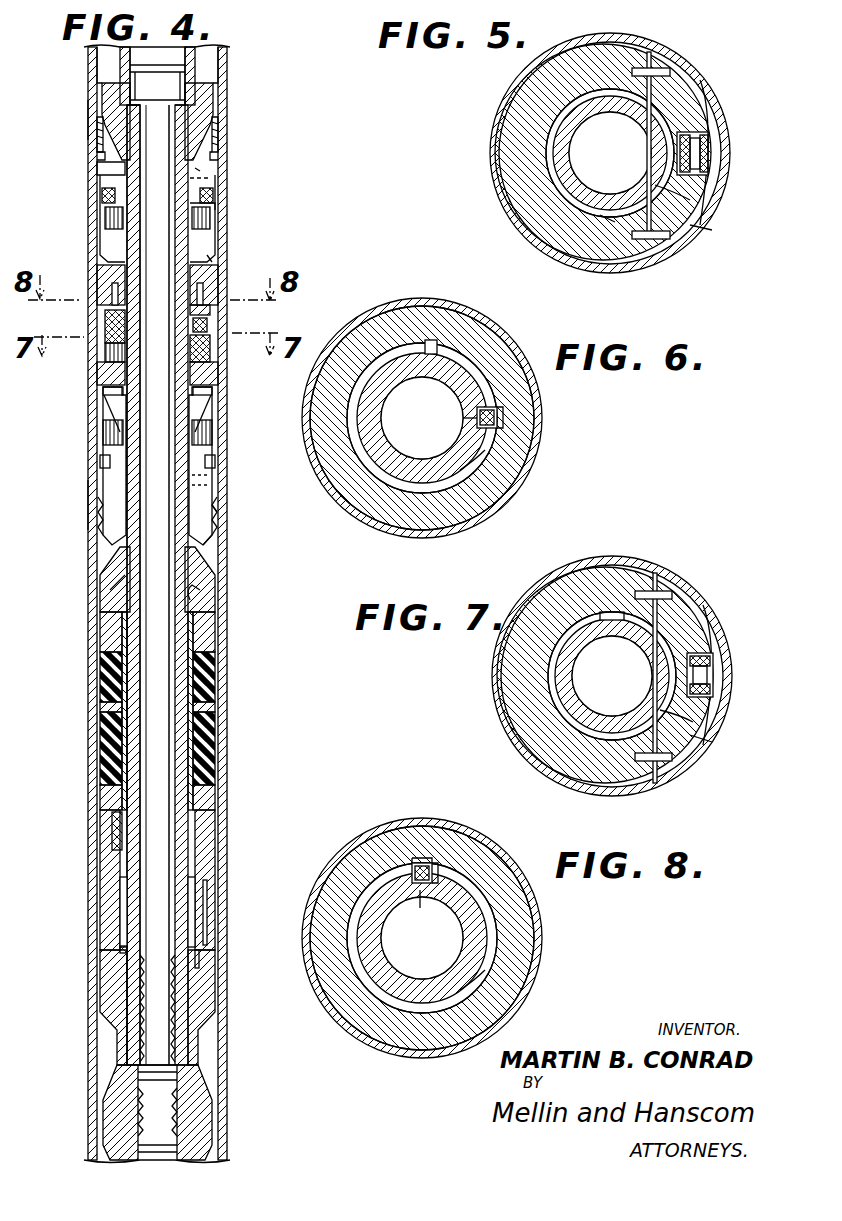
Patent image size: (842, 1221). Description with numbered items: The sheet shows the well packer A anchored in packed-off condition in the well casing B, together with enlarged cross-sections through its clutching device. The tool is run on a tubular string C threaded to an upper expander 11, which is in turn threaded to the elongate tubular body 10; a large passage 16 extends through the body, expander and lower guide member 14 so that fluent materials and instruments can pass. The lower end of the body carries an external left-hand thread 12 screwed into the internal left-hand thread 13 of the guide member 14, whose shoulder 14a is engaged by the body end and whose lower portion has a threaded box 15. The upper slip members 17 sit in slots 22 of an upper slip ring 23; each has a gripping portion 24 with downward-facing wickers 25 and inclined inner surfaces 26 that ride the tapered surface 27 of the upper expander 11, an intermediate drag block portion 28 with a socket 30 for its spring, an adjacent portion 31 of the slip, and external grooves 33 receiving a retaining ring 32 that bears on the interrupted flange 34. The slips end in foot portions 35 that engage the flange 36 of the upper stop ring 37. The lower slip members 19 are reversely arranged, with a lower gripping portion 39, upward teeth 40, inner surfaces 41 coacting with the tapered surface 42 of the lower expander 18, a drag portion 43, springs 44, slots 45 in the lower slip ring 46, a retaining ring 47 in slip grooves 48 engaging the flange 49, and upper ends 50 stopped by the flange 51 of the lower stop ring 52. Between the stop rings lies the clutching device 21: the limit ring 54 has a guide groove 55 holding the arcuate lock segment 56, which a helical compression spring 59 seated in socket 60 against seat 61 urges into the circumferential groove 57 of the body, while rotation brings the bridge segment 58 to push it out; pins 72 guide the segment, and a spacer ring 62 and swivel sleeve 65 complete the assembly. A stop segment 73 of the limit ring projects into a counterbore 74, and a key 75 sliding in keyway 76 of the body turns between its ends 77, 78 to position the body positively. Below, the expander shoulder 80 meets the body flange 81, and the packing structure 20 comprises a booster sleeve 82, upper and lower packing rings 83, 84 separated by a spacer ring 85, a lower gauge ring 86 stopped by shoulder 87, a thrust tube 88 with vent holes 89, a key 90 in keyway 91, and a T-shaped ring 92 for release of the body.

In FIG. 4, the well packer A is at (197, 170).
In FIG. 4, the well casing B is at (88, 118).
In FIG. 4, the tubular string C is at (210, 63).
In FIG. 4, the reference point D is at (105, 63).
In FIG. 4, the body 10 is at (132, 543).
In FIG. 5, the body 10 is at (570, 120).
In FIG. 6, the body 10 is at (362, 422).
In FIG. 7, the body 10 is at (560, 680).
In FIG. 8, the body 10 is at (473, 957).
In FIG. 4, the upper expander 11 is at (112, 90).
In FIG. 4, the external left-hand thread 12 is at (178, 1040).
In FIG. 4, the internal left-hand thread 13 is at (128, 980).
In FIG. 4, the guide member 14 is at (115, 1110).
In FIG. 4, the shoulder 14a is at (136, 1067).
In FIG. 4, the threaded box 15 is at (190, 1118).
In FIG. 4, the passage 16 is at (172, 927).
In FIG. 5, the passage 16 is at (580, 145).
In FIG. 6, the passage 16 is at (384, 405).
In FIG. 7, the passage 16 is at (580, 663).
In FIG. 8, the passage 16 is at (390, 913).
In FIG. 4, the upper slip members 17 is at (100, 168).
In FIG. 4, the lower expander 18 is at (110, 590).
In FIG. 4, the lower slip members 19 is at (97, 503).
In FIG. 4, the packing structure 20 is at (102, 675).
In FIG. 4, the clutching device 21 is at (208, 325).
In FIG. 5, the clutching device 21 is at (682, 98).
In FIG. 7, the clutching device 21 is at (697, 620).
In FIG. 4, the slots 22 is at (207, 262).
In FIG. 4, the upper slip ring 23 is at (100, 240).
In FIG. 4, the upper gripping portion 24 is at (100, 133).
In FIG. 4, the wickers 25 is at (97, 155).
In FIG. 4, the inner surfaces 26 is at (204, 108).
In FIG. 4, the externally tapered surface 27 is at (213, 150).
In FIG. 4, the drag block portion 28 is at (106, 218).
In FIG. 4, the socket 30 is at (212, 240).
In FIG. 4, the retainer ring 31 is at (214, 207).
In FIG. 4, the retaining ring 32 is at (212, 194).
In FIG. 4, the external grooves 33 is at (103, 195).
In FIG. 4, the interrupted flange 34 is at (212, 180).
In FIG. 4, the lower foot portions 35 is at (100, 265).
In FIG. 4, the upwardly projecting flange 36 is at (212, 270).
In FIG. 4, the upper stop ring 37 is at (204, 290).
In FIG. 6, the upper stop ring 37 is at (352, 342).
In FIG. 8, the upper stop ring 37 is at (363, 1018).
In FIG. 4, the lower gripping portion 39 is at (210, 218).
In FIG. 4, the teeth 40 is at (216, 510).
In FIG. 4, the inner surfaces 41 is at (208, 530).
In FIG. 4, the tapered surface 42 is at (200, 560).
In FIG. 4, the drag portion 43 is at (104, 428).
In FIG. 4, the springs 44 is at (211, 435).
In FIG. 4, the longitudinal slots 45 is at (110, 405).
In FIG. 4, the lower slip ring 46 is at (208, 408).
In FIG. 4, the retaining ring 47 is at (101, 460).
In FIG. 4, the slip grooves 48 is at (214, 460).
In FIG. 4, the lower slip ring flange 49 is at (212, 478).
In FIG. 4, the upper ends 50 is at (211, 391).
In FIG. 4, the downwardly extending flange 51 is at (104, 390).
In FIG. 4, the lower stop ring 52 is at (212, 373).
In FIG. 4, the limit ring 54 is at (110, 325).
In FIG. 5, the limit ring 54 is at (612, 48).
In FIG. 7, the limit ring 54 is at (603, 577).
In FIG. 5, the guide groove 55 is at (680, 232).
In FIG. 7, the guide groove 55 is at (690, 740).
In FIG. 5, the lock segment 56 is at (690, 200).
In FIG. 7, the lock segment 56 is at (690, 722).
In FIG. 5, the circumferential groove 57 is at (553, 160).
In FIG. 7, the circumferential groove 57 is at (565, 688).
In FIG. 5, the bridge segment 58 is at (607, 218).
In FIG. 5, the helical compression spring 59 is at (708, 135).
In FIG. 7, the helical compression spring 59 is at (713, 690).
In FIG. 5, the socket 60 is at (700, 150).
In FIG. 7, the socket 60 is at (713, 675).
In FIG. 5, the seat 61 is at (708, 165).
In FIG. 7, the seat 61 is at (712, 660).
In FIG. 4, the spacer ring 62 is at (110, 352).
In FIG. 4, the swivel sleeve 65 is at (210, 348).
In FIG. 5, the swivel sleeve 65 is at (500, 200).
In FIG. 6, the swivel sleeve 65 is at (326, 493).
In FIG. 7, the swivel sleeve 65 is at (503, 710).
In FIG. 8, the swivel sleeve 65 is at (316, 990).
In FIG. 5, the pins 72 is at (665, 70).
In FIG. 7, the pins 72 is at (668, 598).
In FIG. 4, the stop segment 73 is at (205, 312).
In FIG. 6, the stop segment 73 is at (467, 352).
In FIG. 8, the stop segment 73 is at (497, 915).
In FIG. 6, the counterbore 74 is at (480, 458).
In FIG. 8, the counterbore 74 is at (483, 978).
In FIG. 6, the key 75 is at (500, 425).
In FIG. 8, the key 75 is at (420, 858).
In FIG. 6, the keyway 76 is at (478, 417).
In FIG. 8, the keyway 76 is at (440, 918).
In FIG. 6, the end 77 is at (500, 415).
In FIG. 8, the end 77 is at (490, 923).
In FIG. 6, the end 78 is at (430, 345).
In FIG. 8, the end 78 is at (436, 868).
In FIG. 4, the internal shoulder 80 is at (198, 598).
In FIG. 4, the external body flange 81 is at (115, 572).
In FIG. 4, the booster sleeve 82 is at (102, 752).
In FIG. 4, the upper packing ring 83 is at (212, 678).
In FIG. 4, the lower packing ring 84 is at (212, 735).
In FIG. 4, the spacer ring 85 is at (102, 707).
In FIG. 4, the lower gauge ring 86 is at (212, 790).
In FIG. 4, the lower shoulder 87 is at (118, 838).
In FIG. 4, the thrust tube 88 is at (110, 913).
In FIG. 4, the vent holes 89 is at (200, 972).
In FIG. 4, the key 90 is at (200, 858).
In FIG. 4, the keyway 91 is at (196, 890).
In FIG. 4, the T-shaped ring 92 is at (121, 950).